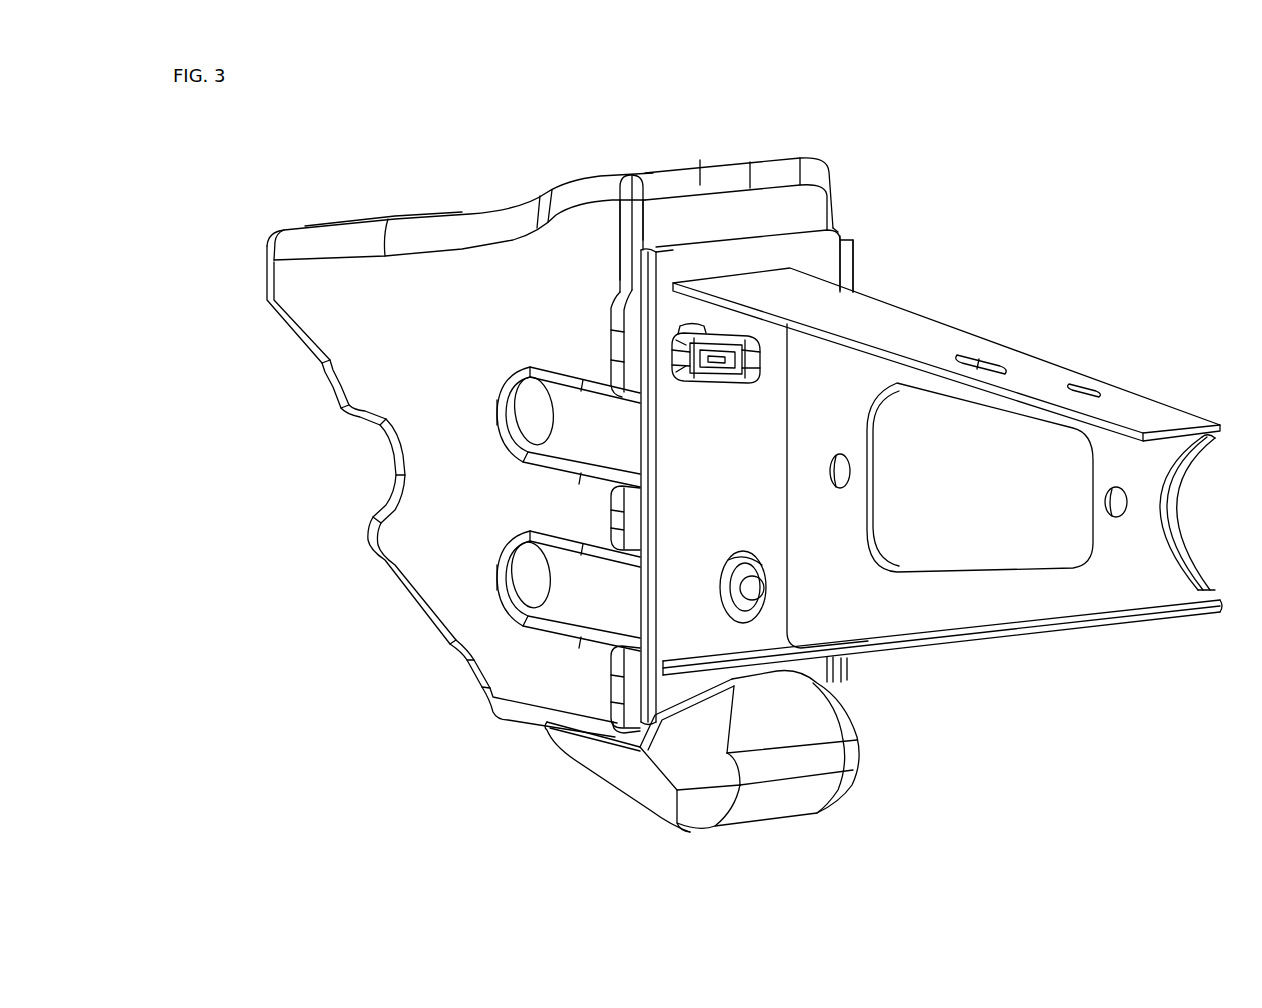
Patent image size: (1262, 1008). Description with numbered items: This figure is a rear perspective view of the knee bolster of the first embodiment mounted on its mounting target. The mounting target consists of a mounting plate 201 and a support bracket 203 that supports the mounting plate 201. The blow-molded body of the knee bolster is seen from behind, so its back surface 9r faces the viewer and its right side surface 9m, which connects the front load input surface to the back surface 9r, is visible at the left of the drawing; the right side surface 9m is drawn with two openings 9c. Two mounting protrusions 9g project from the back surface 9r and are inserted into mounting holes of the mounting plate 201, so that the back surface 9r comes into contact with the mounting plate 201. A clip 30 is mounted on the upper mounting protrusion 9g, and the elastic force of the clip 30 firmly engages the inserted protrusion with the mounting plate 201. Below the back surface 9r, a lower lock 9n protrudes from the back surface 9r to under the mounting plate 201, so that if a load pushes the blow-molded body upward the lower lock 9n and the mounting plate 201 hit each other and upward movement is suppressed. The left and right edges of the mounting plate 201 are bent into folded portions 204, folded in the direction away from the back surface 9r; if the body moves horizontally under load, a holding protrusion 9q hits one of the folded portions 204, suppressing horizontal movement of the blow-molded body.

The right side surface 9m is at (461, 455).
The slots 9c is at (543, 498).
The back surface 9r is at (748, 188).
The mounting protrusion 9g is at (757, 590).
The holding protrusion 9q is at (790, 673).
The lower lock 9n is at (630, 788).
The mounting plate 201 is at (737, 257).
The support bracket 203 is at (1040, 374).
The folded portion 204 is at (652, 249).
The clip 30 is at (763, 362).